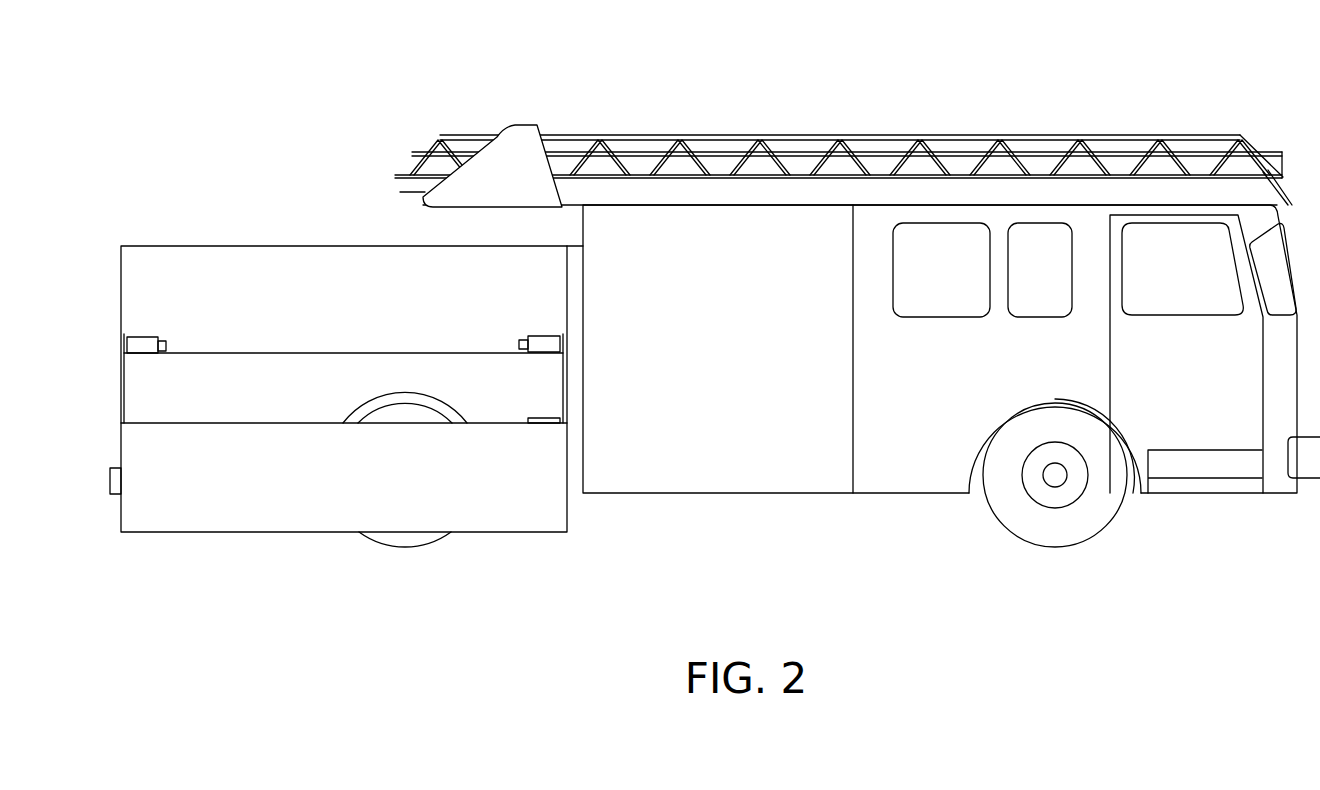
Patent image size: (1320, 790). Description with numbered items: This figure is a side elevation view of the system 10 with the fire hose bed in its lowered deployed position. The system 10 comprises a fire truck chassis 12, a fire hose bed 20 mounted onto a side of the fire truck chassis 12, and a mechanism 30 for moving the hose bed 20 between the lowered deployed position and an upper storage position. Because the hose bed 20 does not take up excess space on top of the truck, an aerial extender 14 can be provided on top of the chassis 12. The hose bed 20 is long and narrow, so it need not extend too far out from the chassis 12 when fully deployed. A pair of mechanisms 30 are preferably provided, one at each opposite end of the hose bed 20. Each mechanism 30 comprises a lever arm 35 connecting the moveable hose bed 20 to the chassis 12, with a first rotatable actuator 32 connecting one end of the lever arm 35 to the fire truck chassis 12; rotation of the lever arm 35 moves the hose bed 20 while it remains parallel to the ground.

The system 10 is at (1071, 74).
The fire truck chassis 12 is at (890, 487).
The aerial extender 14 is at (828, 133).
The fire hose bed 20 is at (240, 532).
The mechanism 30 is at (185, 340).
The first rotatable actuator 32 is at (148, 337).
The lever arm 35 is at (122, 380).